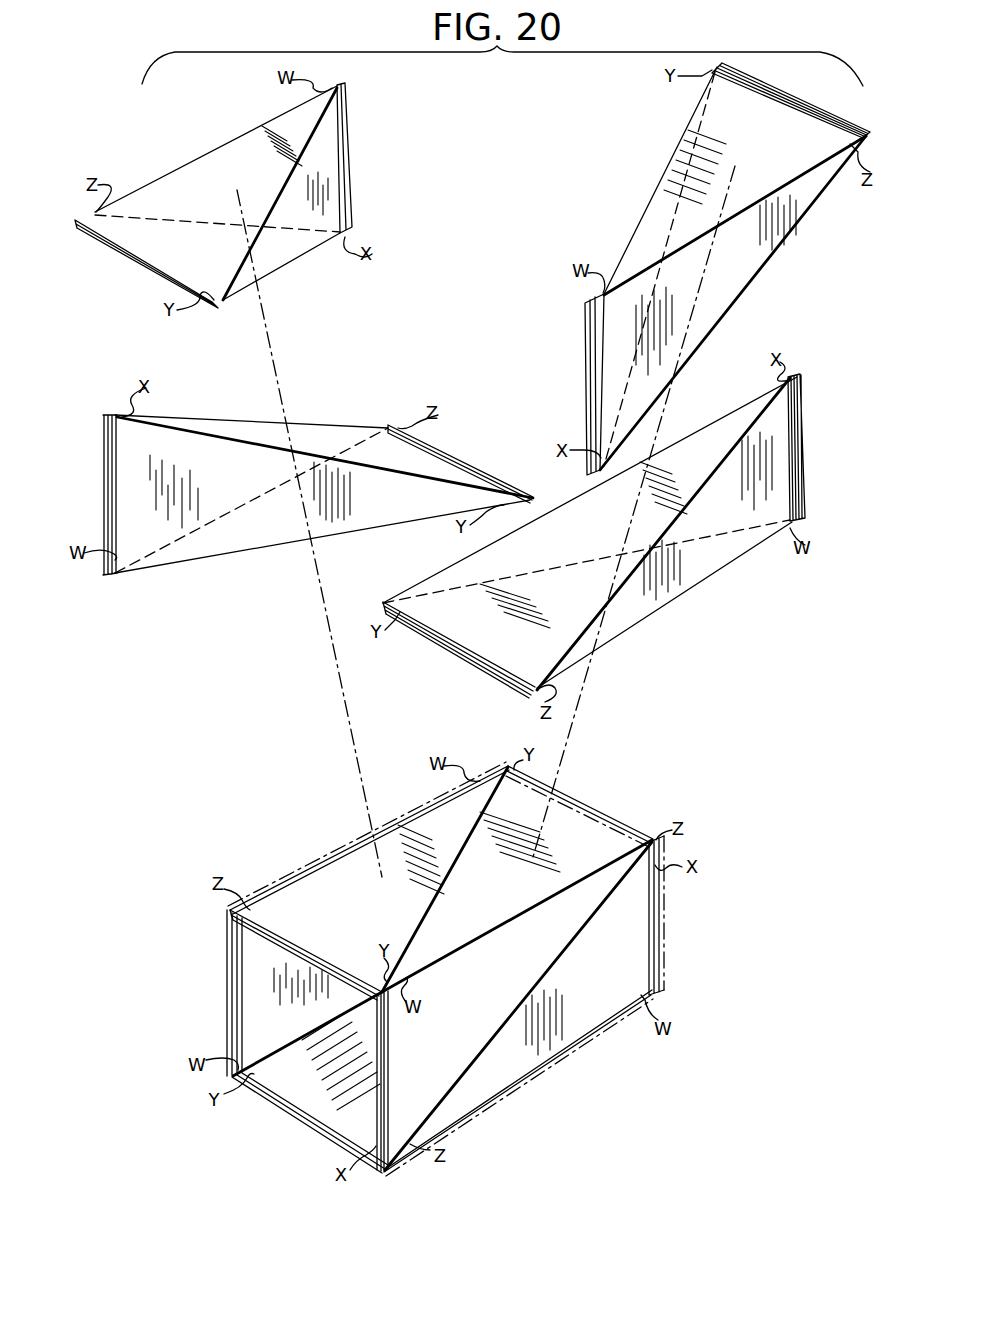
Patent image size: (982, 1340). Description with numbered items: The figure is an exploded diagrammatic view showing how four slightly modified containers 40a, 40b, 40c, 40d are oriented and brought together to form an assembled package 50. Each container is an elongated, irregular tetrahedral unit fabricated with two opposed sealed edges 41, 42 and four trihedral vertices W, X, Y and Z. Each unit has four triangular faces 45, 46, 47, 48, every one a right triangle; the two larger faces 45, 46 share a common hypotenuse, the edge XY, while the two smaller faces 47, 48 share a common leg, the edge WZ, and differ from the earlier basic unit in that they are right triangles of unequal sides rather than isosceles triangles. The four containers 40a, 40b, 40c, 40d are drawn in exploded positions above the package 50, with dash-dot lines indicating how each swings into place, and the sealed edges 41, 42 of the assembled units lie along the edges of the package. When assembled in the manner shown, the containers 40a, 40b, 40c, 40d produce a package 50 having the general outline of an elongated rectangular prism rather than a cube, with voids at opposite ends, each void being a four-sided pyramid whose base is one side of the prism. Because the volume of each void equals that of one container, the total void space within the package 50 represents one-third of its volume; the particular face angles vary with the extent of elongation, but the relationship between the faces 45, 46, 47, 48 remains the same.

The irregular tetrahedral shaped container 40a is at (362, 192).
The irregular tetrahedral shaped container 40b is at (268, 553).
The irregular tetrahedral shaped container 40c is at (774, 285).
The irregular tetrahedral shaped container 40d is at (668, 610).
The sealed edge 41 is at (352, 165).
The sealed edge 42 is at (141, 256).
The triangular face 45 is at (266, 259).
The triangular face 46 is at (311, 448).
The triangular face 47 is at (227, 179).
The triangular face 48 is at (716, 278).
The assembled package 50 is at (676, 911).